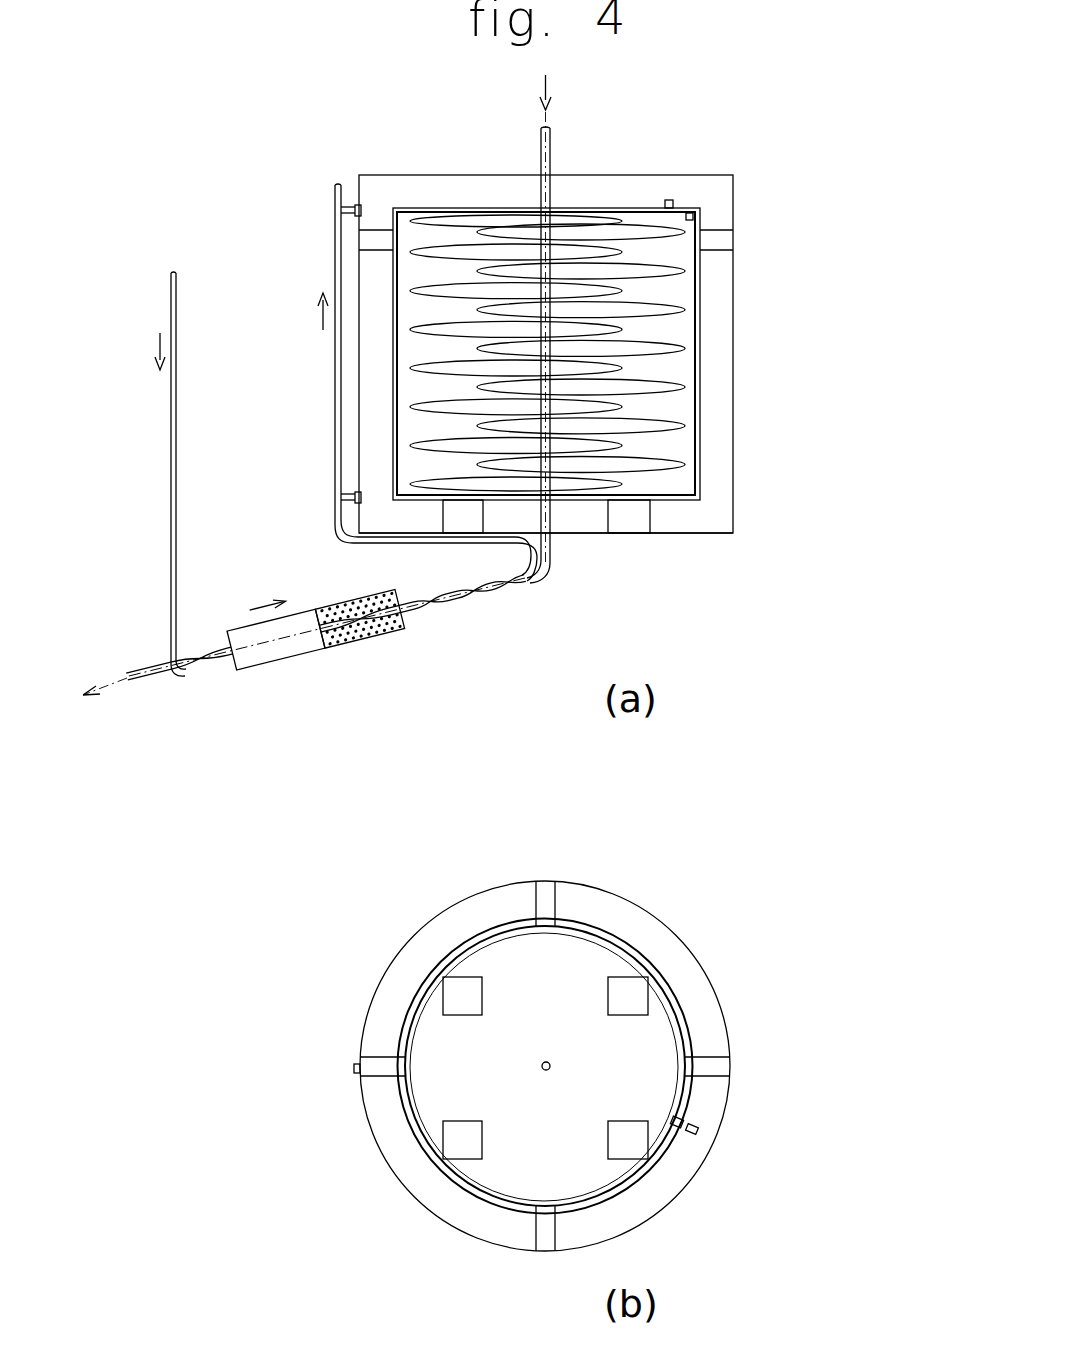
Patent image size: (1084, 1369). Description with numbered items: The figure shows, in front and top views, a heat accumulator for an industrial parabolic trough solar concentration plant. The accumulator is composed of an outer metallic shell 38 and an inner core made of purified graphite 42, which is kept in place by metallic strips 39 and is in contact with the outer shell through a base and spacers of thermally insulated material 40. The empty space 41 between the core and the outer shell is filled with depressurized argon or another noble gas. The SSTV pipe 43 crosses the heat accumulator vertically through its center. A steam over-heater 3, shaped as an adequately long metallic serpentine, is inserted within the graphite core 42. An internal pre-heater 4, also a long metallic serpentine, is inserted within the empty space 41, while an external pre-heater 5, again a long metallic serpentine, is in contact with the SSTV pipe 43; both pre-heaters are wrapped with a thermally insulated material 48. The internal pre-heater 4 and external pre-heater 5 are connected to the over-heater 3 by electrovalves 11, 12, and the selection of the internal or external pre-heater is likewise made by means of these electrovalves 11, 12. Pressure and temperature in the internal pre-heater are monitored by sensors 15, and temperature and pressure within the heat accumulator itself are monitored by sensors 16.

The steam over-heater 3 is at (667, 423).
The internal pre-heater 4 is at (698, 463).
The external pre-heater 5 is at (477, 597).
The electrovalve 11 is at (357, 208).
The electrovalve 12 is at (357, 496).
The sensors 15 is at (670, 202).
The sensors 16 is at (692, 215).
The outer metallic shell 38 is at (733, 287).
The metallic strips 39 is at (693, 340).
The base and spacers of thermally insulated material 40 is at (728, 240).
The empty space 41 is at (717, 503).
The inner core of purified graphite 42 is at (663, 370).
The SSTV pipe 43 is at (549, 148).
The thermally insulated material 48 is at (340, 642).